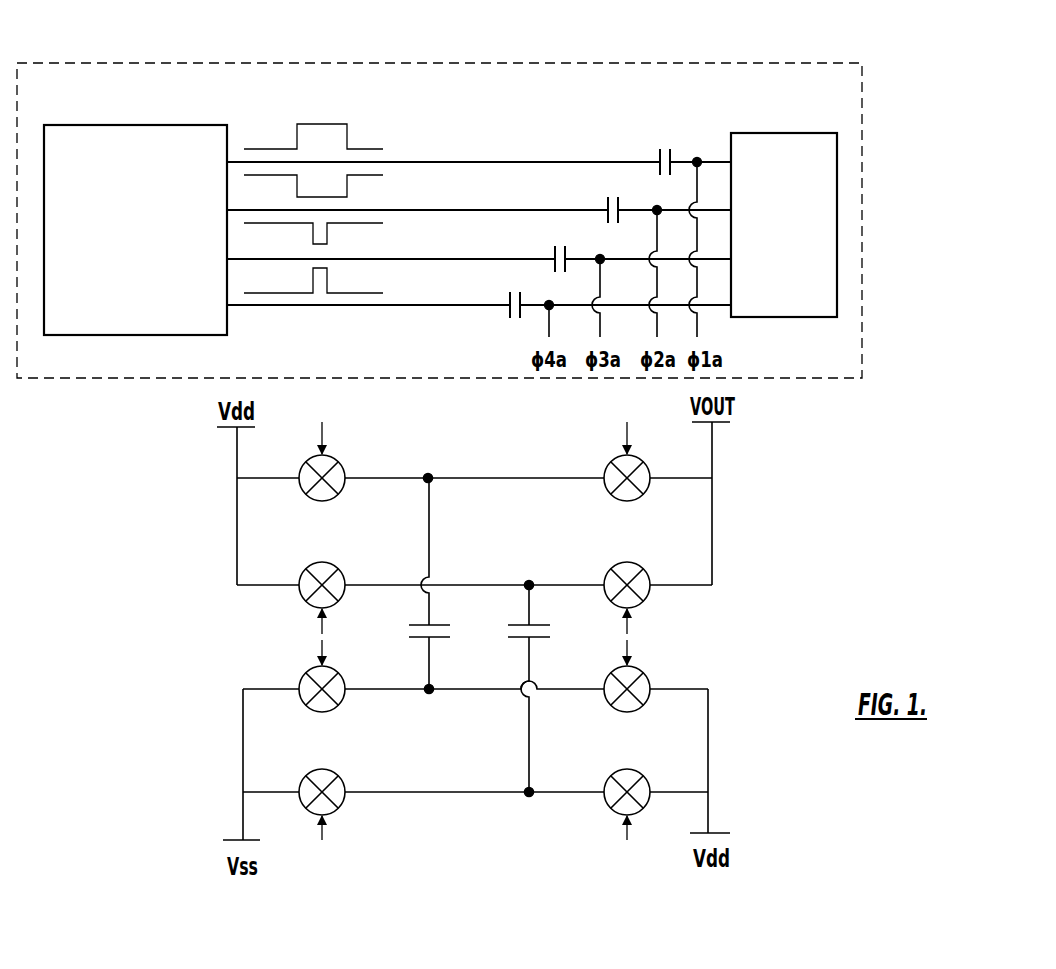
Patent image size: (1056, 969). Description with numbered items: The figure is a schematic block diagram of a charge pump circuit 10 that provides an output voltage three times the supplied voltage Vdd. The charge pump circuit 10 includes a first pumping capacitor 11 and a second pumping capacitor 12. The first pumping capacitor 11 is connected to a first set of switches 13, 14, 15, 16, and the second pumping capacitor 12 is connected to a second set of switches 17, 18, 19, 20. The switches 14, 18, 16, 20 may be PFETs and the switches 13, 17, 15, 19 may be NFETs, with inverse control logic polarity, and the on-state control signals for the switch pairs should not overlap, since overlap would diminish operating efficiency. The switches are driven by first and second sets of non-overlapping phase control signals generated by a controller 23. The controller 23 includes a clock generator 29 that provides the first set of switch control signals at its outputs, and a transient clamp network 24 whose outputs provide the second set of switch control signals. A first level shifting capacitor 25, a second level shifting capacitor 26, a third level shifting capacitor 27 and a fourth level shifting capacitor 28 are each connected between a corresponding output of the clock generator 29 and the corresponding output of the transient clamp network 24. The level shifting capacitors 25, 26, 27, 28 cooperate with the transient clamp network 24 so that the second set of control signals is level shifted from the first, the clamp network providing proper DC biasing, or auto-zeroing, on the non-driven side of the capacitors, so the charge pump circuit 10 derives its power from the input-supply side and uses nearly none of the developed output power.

The charge pump circuit 10 is at (980, 118).
The first pumping capacitor 11 is at (447, 624).
The second pumping capacitor 12 is at (546, 624).
The switch 13 is at (337, 462).
The switch 14 is at (641, 462).
The switch 15 is at (346, 698).
The switch 16 is at (606, 698).
The switch 17 is at (337, 569).
The switch 18 is at (613, 566).
The switch 19 is at (341, 806).
The switch 20 is at (608, 806).
The controller 23 is at (812, 60).
The transient clamp network 24 is at (778, 133).
The first level shifting capacitor 25 is at (658, 150).
The second level shifting capacitor 26 is at (607, 200).
The third level shifting capacitor 27 is at (553, 247).
The fourth level shifting capacitor 28 is at (508, 292).
The clock generator 29 is at (128, 125).